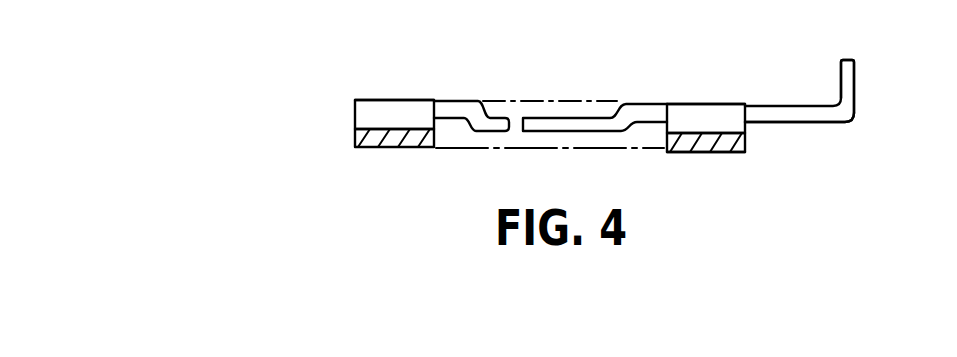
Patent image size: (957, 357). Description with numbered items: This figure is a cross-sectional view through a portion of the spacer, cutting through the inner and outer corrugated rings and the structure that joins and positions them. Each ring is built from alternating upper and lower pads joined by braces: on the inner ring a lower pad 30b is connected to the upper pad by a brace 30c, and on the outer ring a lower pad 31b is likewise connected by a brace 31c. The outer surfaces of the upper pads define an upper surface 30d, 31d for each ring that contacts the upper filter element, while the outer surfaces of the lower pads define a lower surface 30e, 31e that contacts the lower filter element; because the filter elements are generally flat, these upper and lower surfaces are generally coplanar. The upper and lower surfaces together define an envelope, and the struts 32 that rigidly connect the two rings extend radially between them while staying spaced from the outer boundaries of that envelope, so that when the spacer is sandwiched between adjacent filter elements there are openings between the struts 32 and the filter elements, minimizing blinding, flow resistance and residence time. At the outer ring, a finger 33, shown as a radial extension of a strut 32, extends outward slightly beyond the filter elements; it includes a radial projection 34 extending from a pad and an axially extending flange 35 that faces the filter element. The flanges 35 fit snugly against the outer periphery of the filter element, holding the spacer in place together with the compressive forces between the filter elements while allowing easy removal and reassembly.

The lower pad 30b is at (358, 142).
The brace 30c is at (405, 113).
The upper surface 30d is at (367, 100).
The lower surface 30e is at (408, 150).
The lower pad 31b is at (738, 143).
The brace 31c is at (713, 122).
The upper surface 31d is at (677, 102).
The lower surface 31e is at (688, 152).
The strut 32 is at (553, 128).
The finger 33 is at (854, 117).
The radial projection 34 is at (797, 112).
The axially extending flange 35 is at (851, 79).